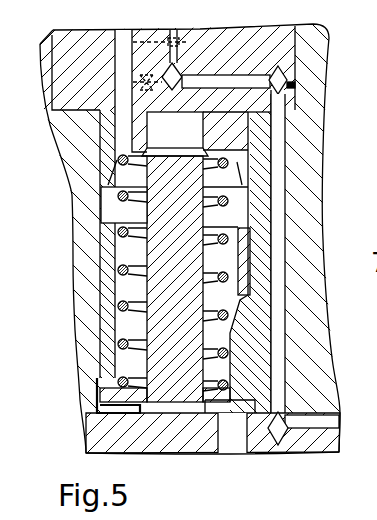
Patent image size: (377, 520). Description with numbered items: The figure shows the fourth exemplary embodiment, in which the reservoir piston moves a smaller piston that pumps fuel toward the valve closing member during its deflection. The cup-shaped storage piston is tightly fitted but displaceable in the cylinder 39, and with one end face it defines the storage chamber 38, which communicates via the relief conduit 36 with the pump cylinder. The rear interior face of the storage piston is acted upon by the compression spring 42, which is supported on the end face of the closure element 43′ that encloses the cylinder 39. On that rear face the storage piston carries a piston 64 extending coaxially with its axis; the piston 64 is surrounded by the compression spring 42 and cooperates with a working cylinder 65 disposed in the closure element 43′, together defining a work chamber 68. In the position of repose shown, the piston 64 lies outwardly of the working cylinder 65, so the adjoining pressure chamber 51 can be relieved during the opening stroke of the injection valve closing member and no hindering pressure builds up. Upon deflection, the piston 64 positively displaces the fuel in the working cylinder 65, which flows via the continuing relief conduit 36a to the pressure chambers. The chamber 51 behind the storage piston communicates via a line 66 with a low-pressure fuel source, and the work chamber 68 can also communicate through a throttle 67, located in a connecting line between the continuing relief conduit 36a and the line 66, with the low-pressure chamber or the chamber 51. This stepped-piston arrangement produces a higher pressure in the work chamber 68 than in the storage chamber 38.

The relief conduit 36 is at (230, 432).
The continuing relief conduit 36a is at (300, 23).
The storage chamber 38 is at (103, 407).
The cylinder 39 is at (100, 373).
The compression spring 42 is at (237, 203).
The closure element 43′ is at (63, 90).
The pressure chamber 51 is at (125, 250).
The piston 64 is at (173, 303).
The working cylinder 65 is at (203, 135).
The line 66 is at (125, 65).
The throttle 67 is at (148, 80).
The work chamber 68 is at (167, 132).